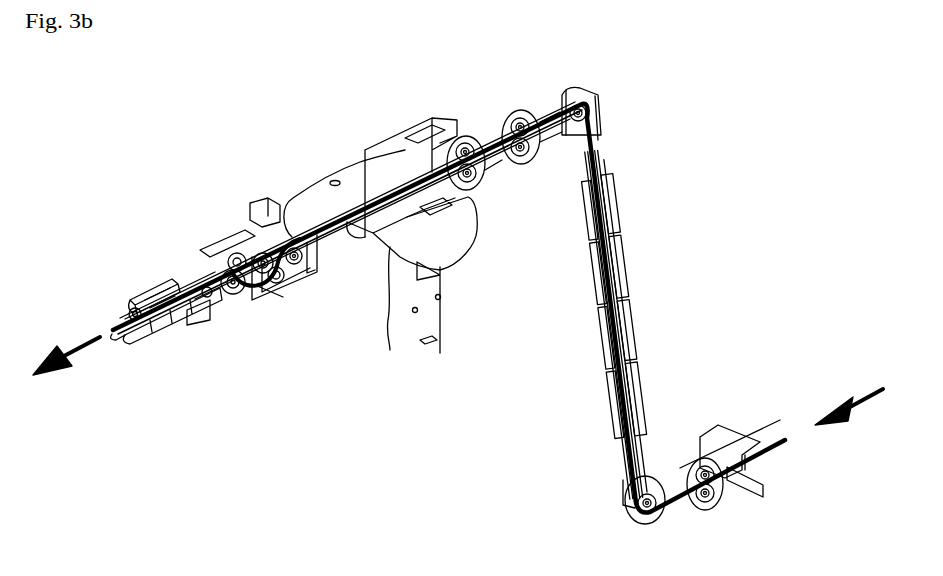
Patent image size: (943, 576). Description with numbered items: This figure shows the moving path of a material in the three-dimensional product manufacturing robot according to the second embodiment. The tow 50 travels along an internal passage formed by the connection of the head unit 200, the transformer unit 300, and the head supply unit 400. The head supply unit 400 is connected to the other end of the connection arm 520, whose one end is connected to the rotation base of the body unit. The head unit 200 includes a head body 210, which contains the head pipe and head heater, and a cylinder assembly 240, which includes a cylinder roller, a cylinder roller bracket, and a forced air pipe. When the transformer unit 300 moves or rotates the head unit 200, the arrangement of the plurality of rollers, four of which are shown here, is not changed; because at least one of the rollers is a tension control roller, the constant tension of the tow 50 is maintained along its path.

The head supply unit 400 is at (305, 186).
The tow 50 is at (501, 157).
The connection arm 520 is at (433, 310).
The transformer unit 300 is at (284, 293).
The cylinder assembly 240 is at (152, 291).
The head body 210 is at (156, 332).
The head unit 200 is at (188, 318).